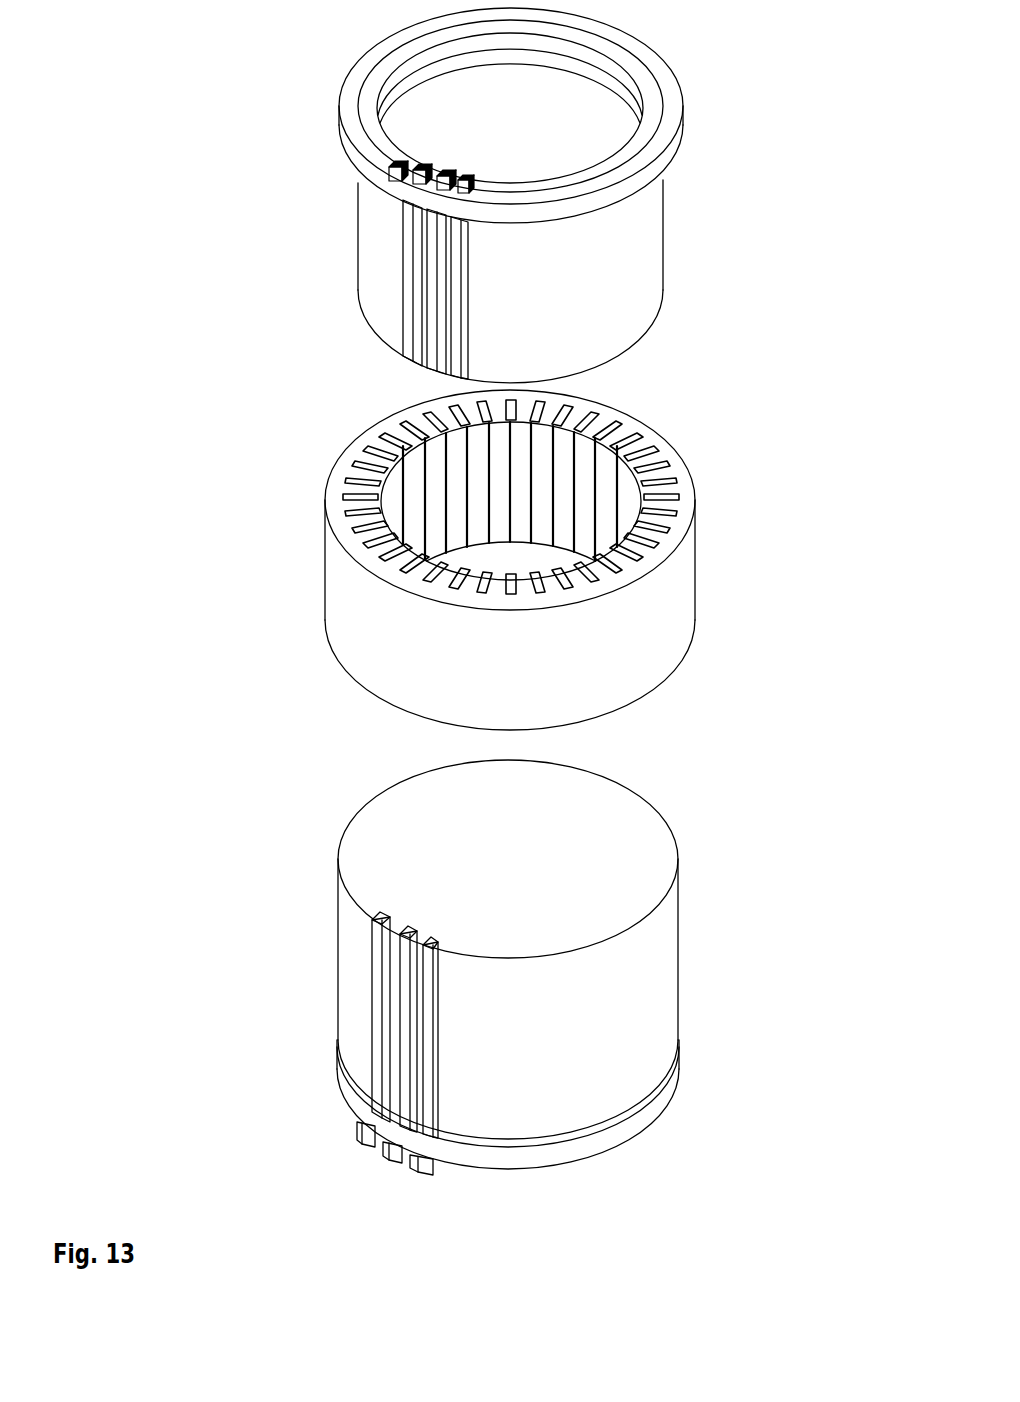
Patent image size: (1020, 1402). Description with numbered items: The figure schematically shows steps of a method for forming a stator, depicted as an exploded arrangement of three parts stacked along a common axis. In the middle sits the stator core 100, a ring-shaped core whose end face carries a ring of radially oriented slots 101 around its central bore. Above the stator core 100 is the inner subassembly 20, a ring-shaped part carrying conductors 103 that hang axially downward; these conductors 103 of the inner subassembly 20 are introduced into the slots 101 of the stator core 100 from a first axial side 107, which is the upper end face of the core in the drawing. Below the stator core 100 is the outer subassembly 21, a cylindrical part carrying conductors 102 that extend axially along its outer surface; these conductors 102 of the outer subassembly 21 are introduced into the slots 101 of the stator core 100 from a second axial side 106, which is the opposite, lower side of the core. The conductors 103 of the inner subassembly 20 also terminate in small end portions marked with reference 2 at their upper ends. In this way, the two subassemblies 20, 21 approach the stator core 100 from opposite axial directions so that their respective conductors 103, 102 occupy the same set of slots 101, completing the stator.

The terminal 2 is at (400, 172).
The inner subassembly 20 is at (419, 191).
The outer subassembly 21 is at (713, 908).
The stator core 100 is at (658, 605).
The slots 101 is at (617, 437).
The conductors 102 is at (432, 1043).
The conductors 103 is at (463, 312).
The second axial side 106 is at (308, 639).
The first axial side 107 is at (310, 485).